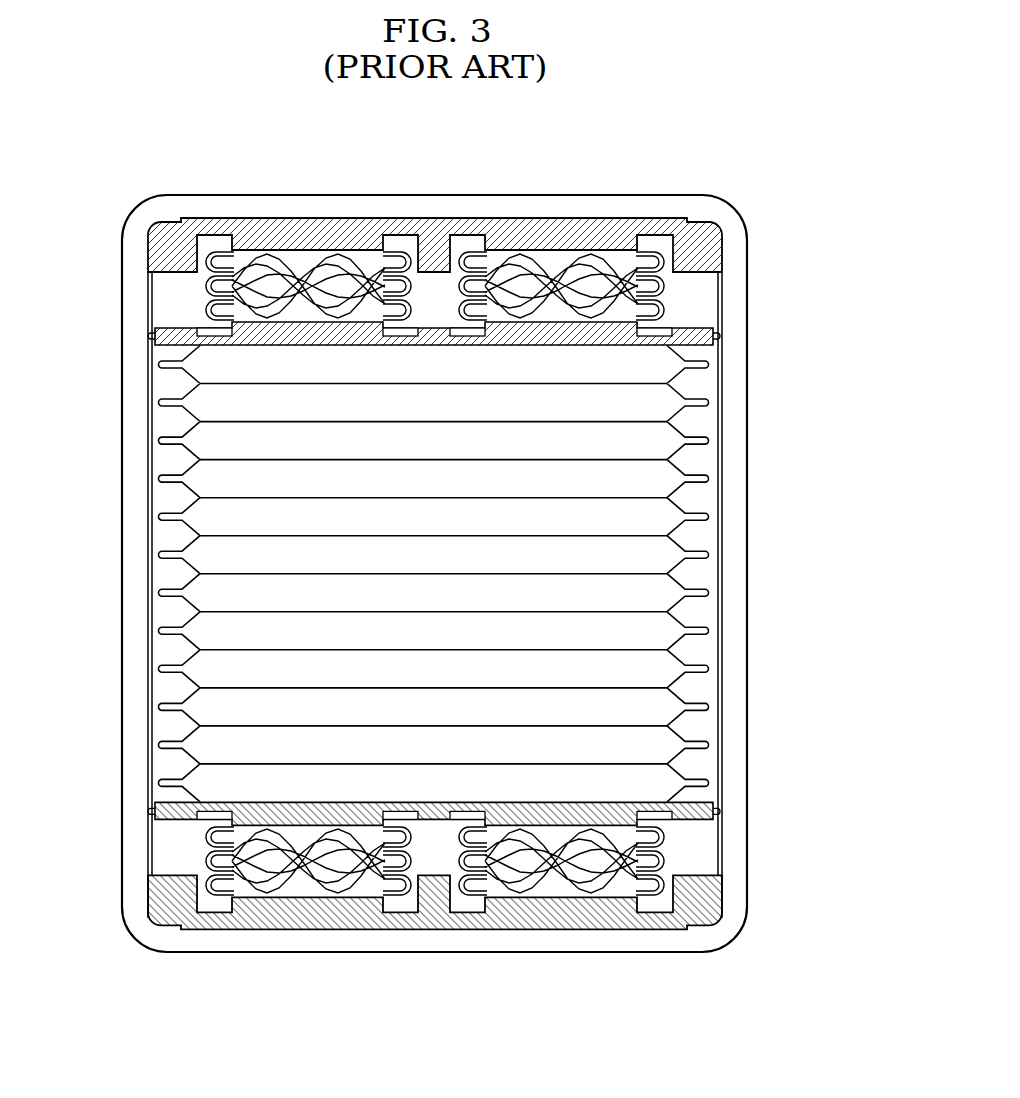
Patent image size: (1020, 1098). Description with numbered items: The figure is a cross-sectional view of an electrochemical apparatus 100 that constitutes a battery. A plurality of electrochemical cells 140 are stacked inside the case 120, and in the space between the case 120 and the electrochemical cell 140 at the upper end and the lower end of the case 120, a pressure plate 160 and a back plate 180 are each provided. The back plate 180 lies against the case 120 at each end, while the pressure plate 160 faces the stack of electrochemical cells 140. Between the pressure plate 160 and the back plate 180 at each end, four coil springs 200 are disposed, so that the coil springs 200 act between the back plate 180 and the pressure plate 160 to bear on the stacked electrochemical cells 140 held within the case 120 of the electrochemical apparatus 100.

The electrochemical apparatus 100 is at (727, 162).
The case 120 is at (737, 299).
The electrochemical cell 140 is at (205, 592).
The pressure plate 160 is at (173, 340).
The back plate 180 is at (579, 232).
The coil spring 200 is at (532, 283).